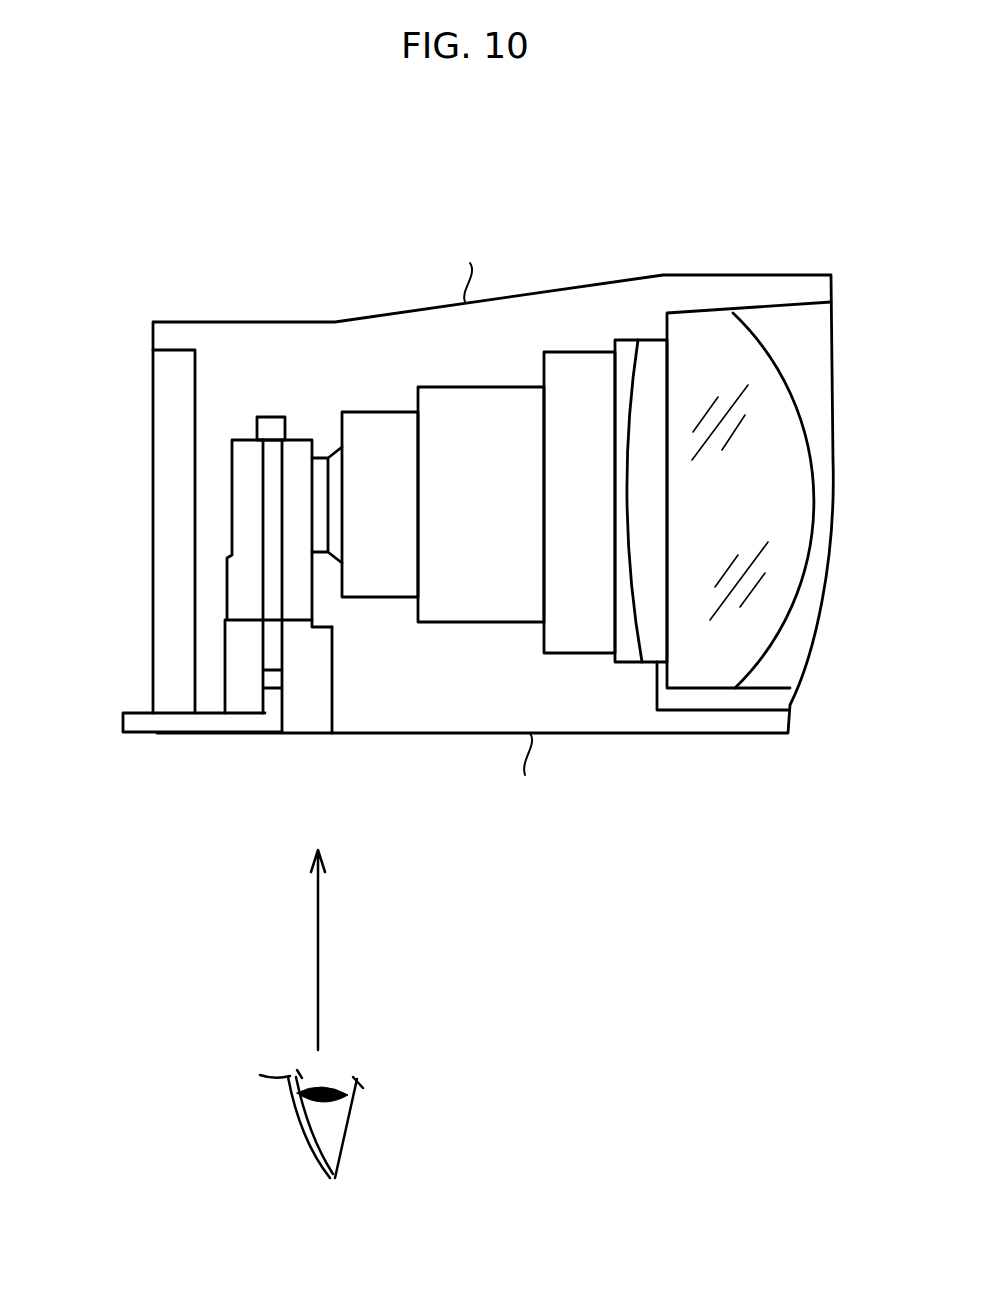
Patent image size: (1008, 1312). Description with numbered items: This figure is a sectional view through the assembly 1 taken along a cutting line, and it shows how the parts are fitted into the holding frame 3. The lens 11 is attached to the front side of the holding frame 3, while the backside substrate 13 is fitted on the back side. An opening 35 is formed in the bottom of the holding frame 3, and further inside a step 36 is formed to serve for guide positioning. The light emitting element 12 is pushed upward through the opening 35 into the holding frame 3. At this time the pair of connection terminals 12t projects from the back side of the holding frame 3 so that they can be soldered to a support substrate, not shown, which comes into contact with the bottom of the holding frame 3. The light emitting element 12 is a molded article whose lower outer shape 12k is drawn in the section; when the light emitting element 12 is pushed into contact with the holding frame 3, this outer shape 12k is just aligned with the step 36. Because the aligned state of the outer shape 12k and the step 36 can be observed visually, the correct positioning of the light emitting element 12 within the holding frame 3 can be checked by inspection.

The finder unit 1 is at (327, 271).
The holding frame 3 is at (617, 298).
The lens 11 is at (763, 410).
The light emitting element 12 is at (243, 472).
The lower outer shape 12k is at (243, 622).
The connection terminals 12t is at (138, 708).
The backside substrate 13 is at (177, 383).
The opening 35 is at (330, 682).
The step 36 is at (342, 612).